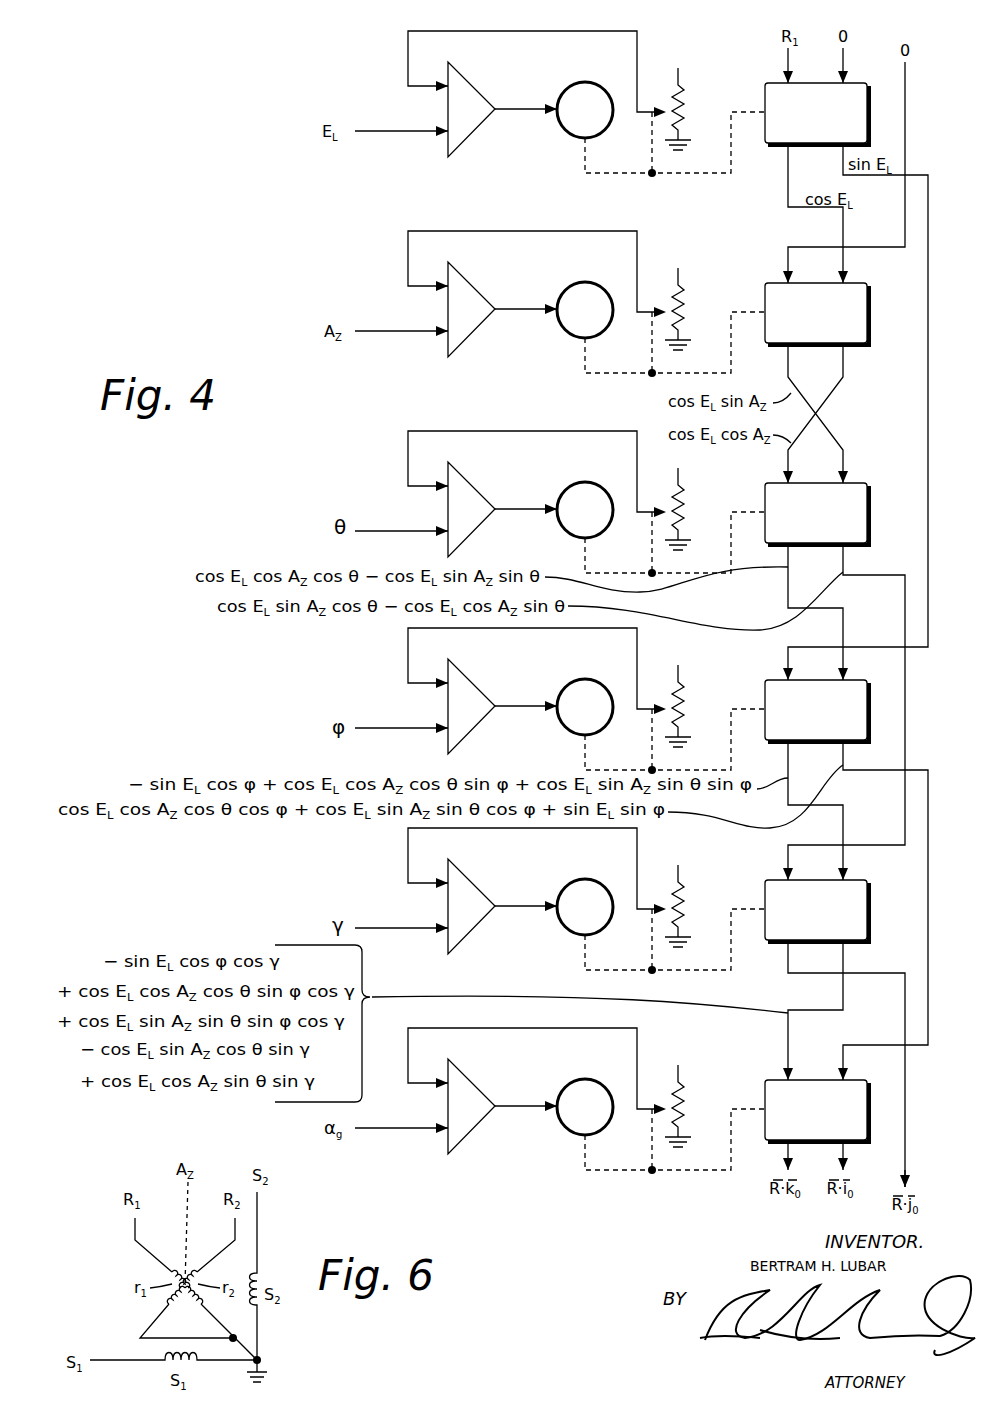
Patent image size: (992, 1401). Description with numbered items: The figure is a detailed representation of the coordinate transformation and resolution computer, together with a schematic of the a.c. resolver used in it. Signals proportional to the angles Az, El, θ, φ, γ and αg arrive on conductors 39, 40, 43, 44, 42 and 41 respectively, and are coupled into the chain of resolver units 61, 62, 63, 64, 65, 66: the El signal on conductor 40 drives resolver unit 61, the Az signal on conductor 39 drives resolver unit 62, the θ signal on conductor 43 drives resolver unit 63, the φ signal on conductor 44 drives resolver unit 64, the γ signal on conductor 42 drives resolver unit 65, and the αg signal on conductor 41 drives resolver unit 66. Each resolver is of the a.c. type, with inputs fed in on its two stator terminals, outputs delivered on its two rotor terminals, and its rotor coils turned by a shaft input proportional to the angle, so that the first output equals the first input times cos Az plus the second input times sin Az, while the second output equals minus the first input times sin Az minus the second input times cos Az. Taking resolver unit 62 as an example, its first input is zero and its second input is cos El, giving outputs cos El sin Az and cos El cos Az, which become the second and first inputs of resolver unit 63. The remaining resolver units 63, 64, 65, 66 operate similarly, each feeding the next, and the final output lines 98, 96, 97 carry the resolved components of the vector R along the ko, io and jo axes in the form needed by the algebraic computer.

The conductor 39 is at (404, 331).
The conductor 40 is at (404, 131).
The conductor 41 is at (404, 1128).
The conductor 42 is at (404, 928).
The conductor 43 is at (404, 531).
The conductor 44 is at (404, 728).
The resolver unit 61 is at (530, 80).
The resolver unit 62 is at (530, 280).
The resolver unit 63 is at (530, 480).
The resolver unit 64 is at (530, 677).
The resolver unit 65 is at (530, 877).
The resolver unit 66 is at (530, 1077).
The R·i0 output line 96 is at (843, 1150).
The R·j0 output line 97 is at (905, 1150).
The R·k0 output line 98 is at (786, 1150).